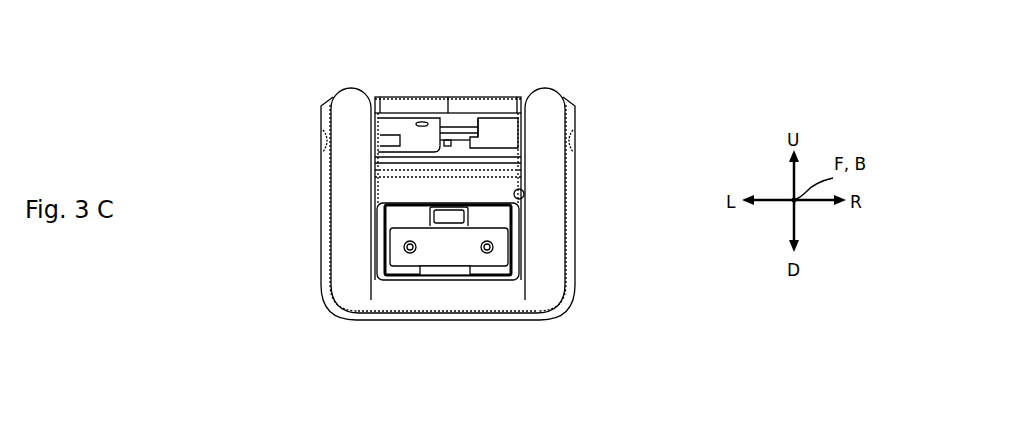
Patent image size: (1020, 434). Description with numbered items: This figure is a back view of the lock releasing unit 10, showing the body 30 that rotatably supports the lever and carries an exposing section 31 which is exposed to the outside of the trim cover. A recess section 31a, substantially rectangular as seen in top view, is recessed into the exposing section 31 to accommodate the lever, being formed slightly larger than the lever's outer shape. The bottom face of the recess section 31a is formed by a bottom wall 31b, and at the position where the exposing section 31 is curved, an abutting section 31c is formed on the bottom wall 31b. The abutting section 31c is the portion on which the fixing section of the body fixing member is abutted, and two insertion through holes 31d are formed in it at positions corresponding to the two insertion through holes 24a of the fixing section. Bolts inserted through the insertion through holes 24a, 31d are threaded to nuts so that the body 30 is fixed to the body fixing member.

The seat device 10 is at (226, 62).
The body 30 is at (428, 66).
The exposing section 31 is at (545, 90).
The recess section 31a is at (522, 190).
The bottom wall 31b is at (460, 150).
The abutting section 31c is at (452, 265).
The insertion through holes 24a is at (404, 247).
The insertion through holes 31d is at (493, 247).